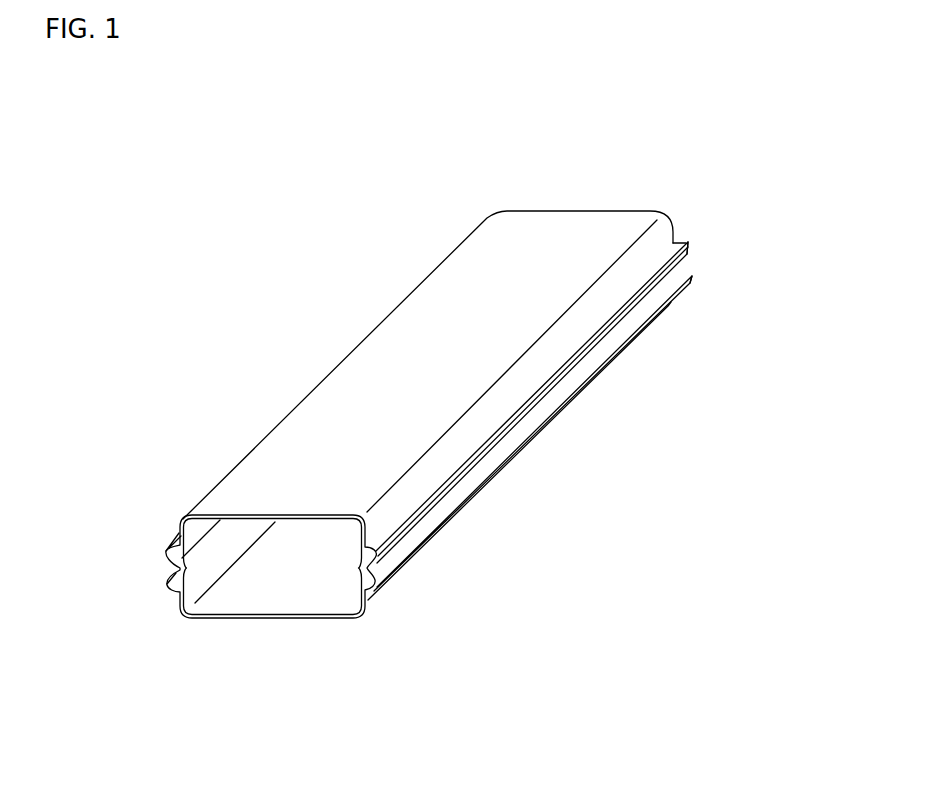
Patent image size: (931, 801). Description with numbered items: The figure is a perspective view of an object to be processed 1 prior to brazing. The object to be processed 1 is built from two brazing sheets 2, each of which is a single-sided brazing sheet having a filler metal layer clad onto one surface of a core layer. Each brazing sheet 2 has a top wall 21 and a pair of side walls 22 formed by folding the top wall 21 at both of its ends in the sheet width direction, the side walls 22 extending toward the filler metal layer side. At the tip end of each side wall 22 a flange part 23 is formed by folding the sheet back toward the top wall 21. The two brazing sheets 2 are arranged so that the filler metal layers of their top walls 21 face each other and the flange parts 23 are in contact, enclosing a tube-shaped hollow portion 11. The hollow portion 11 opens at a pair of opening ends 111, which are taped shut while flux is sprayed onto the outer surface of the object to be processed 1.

The object to be processed 1 is at (262, 257).
The hollow portion 11 is at (316, 566).
The opening ends 111 is at (298, 520).
The brazing sheet 2 is at (562, 211).
The top wall 21 is at (445, 310).
The side walls 22 is at (657, 247).
The flange part 23 is at (676, 280).